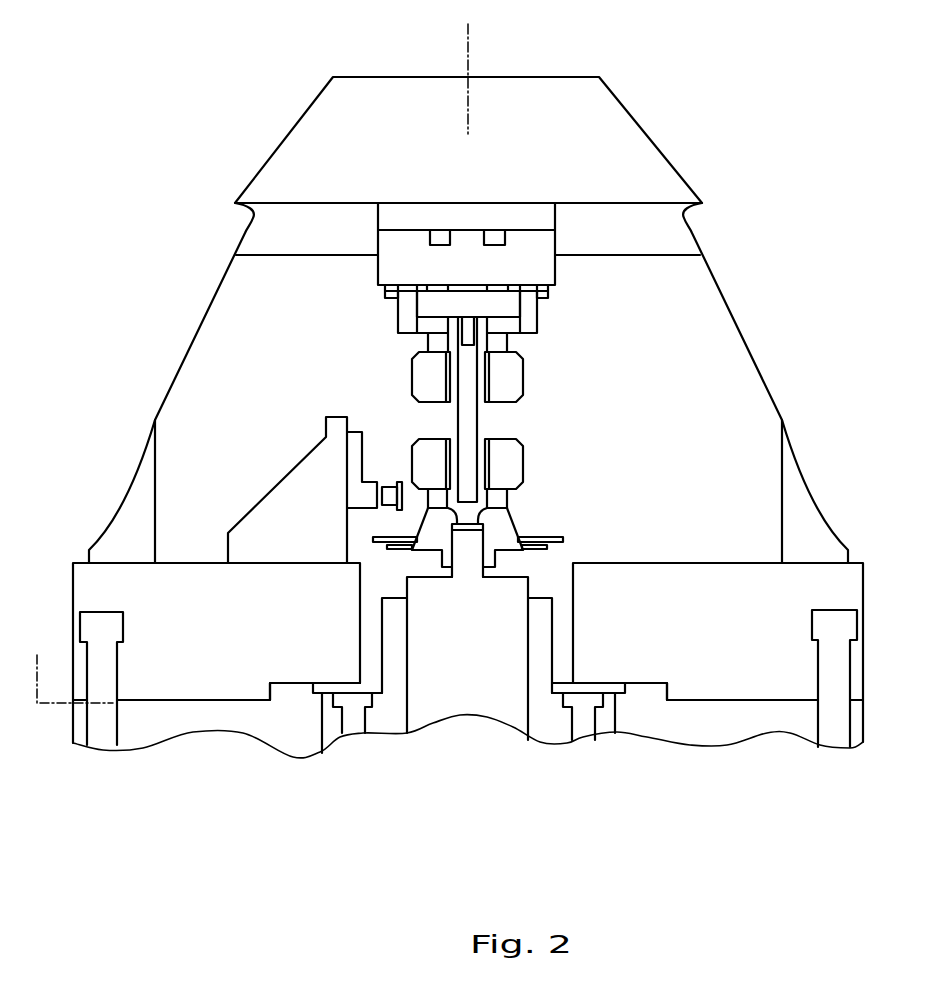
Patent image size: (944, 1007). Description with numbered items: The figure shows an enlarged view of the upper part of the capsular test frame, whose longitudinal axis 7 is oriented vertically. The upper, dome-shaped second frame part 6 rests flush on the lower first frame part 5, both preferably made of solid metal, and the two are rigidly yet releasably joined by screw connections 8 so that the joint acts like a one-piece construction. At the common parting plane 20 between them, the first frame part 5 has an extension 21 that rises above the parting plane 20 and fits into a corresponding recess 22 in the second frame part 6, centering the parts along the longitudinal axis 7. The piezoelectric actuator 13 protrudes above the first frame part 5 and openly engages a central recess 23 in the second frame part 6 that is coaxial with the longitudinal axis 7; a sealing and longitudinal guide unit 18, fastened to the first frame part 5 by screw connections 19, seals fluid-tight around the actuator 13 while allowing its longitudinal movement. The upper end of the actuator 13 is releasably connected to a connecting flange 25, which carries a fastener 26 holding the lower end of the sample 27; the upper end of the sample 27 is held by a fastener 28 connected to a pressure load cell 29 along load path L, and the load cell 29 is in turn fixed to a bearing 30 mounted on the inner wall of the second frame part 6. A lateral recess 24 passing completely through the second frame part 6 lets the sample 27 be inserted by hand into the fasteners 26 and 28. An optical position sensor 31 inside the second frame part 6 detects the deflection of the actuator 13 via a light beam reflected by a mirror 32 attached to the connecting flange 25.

The first frame part 5 is at (150, 723).
The second frame part 6 is at (612, 135).
The longitudinal axis 7 is at (470, 38).
The screw connections 8 is at (103, 665).
The piezoelectric actuator 13 is at (478, 705).
The sealing and longitudinal guide unit 18 is at (392, 723).
The screw connections 19 is at (352, 723).
The parting plane 20 is at (67, 665).
The extension 21 is at (292, 688).
The recess 22 is at (642, 698).
The central recess 23 is at (545, 605).
The lateral recess 24 is at (620, 384).
The connecting flange 25 is at (500, 530).
The fastener 26 is at (512, 458).
The sample 27 is at (467, 425).
The fastener 28 is at (512, 378).
The pressure load cell 29 is at (492, 303).
The bearing 30 is at (537, 245).
The optical position sensor 31 is at (293, 488).
The mirror 32 is at (373, 541).